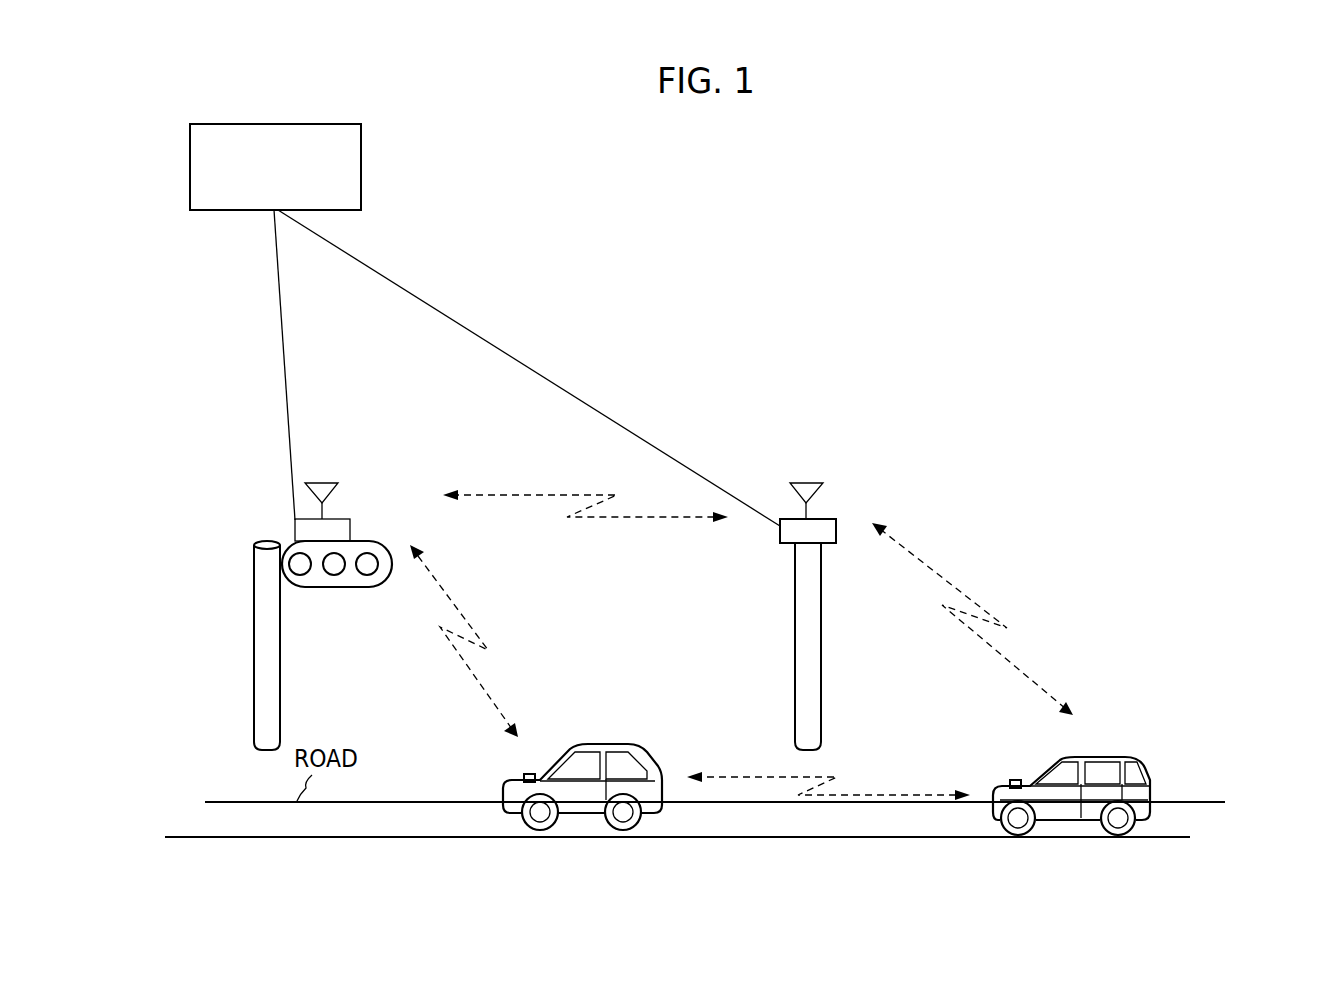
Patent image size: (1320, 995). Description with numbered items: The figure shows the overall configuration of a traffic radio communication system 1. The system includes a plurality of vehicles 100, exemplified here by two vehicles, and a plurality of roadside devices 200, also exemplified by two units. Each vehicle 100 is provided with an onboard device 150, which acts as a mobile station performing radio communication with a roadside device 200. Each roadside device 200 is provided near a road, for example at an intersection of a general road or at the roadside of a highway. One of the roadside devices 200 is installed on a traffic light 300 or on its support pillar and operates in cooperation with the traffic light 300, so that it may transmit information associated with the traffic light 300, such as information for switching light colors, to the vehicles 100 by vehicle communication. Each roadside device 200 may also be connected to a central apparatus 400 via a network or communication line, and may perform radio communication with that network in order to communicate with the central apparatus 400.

The traffic radio communication system 1 is at (962, 272).
The central apparatus 400 is at (361, 167).
The roadside device 200 is at (340, 518).
The traffic light 300 is at (333, 588).
The vehicle 100 is at (617, 748).
The onboard device 150 is at (529, 773).